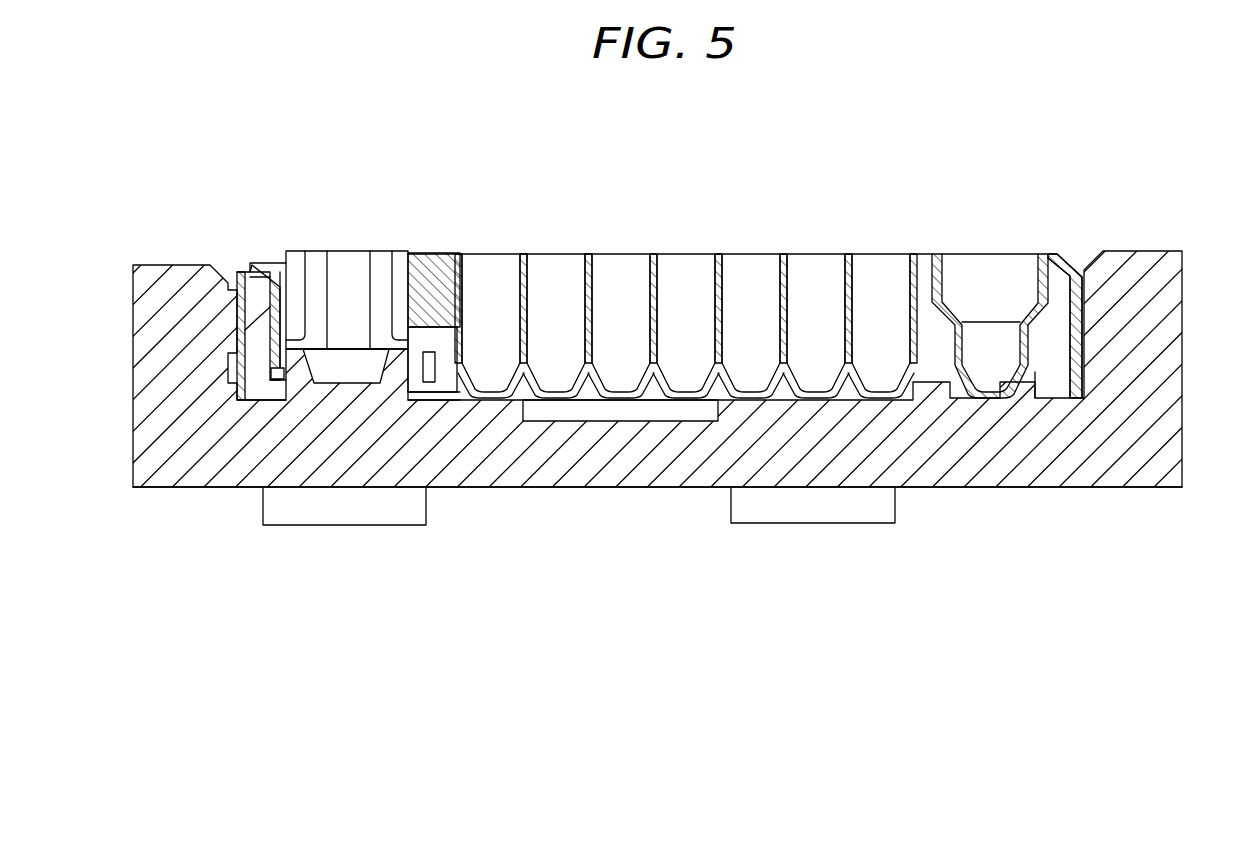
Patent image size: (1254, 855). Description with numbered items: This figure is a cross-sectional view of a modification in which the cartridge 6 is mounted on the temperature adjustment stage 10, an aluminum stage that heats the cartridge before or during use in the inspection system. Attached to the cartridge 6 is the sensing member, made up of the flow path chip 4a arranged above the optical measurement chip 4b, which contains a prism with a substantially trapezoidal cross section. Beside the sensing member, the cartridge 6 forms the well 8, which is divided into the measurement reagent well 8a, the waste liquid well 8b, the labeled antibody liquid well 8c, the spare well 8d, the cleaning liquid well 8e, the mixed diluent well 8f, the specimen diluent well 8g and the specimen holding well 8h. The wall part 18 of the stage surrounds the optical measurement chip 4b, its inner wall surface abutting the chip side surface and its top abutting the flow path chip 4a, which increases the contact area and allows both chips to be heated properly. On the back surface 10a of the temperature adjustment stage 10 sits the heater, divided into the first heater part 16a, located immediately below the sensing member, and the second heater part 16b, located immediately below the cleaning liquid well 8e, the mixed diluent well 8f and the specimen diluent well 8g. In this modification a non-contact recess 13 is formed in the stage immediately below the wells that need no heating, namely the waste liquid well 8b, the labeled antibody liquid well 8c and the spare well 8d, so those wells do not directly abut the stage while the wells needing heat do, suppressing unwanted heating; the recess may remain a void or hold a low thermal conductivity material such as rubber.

The flow path chip 4a is at (329, 228).
The optical measurement chip 4b is at (347, 367).
The cartridge 6 is at (1069, 230).
The well 8 is at (1010, 195).
The measurement reagent well 8a is at (488, 282).
The waste liquid well 8b is at (552, 282).
The labeled antibody liquid well 8c is at (620, 282).
The spare well 8d is at (683, 282).
The cleaning liquid well 8e is at (747, 282).
The mixed diluent well 8f is at (813, 282).
The specimen diluent well 8g is at (877, 282).
The specimen holding well 8h is at (983, 282).
The temperature adjustment stage 10 is at (1168, 292).
The back surface 10a is at (1002, 487).
The non-contact recess 13 is at (620, 417).
The first heater part 16a is at (343, 515).
The second heater part 16b is at (810, 513).
The wall part 18 is at (297, 373).